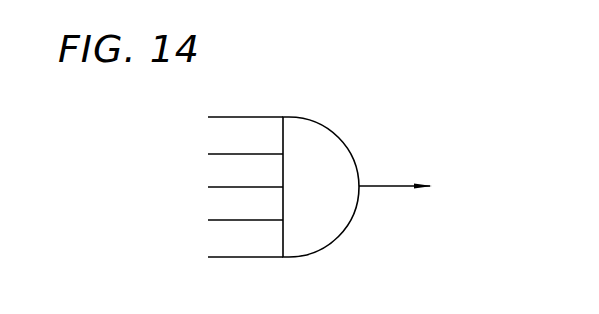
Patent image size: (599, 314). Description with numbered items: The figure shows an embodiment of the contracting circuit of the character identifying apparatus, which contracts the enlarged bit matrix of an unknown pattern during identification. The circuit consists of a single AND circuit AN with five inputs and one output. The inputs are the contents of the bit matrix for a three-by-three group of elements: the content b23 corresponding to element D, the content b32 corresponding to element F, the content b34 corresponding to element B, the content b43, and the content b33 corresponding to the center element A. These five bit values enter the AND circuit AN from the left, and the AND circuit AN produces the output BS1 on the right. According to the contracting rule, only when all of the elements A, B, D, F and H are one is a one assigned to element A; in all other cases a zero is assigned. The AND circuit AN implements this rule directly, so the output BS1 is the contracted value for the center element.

The AND circuit AN is at (345, 109).
The bit matrix content b23 is at (222, 115).
The bit matrix content b32 is at (222, 152).
The bit matrix content b34 is at (222, 186).
The bit matrix content b43 is at (222, 220).
The bit matrix content b33 is at (222, 256).
The contracted output BS1 is at (419, 190).